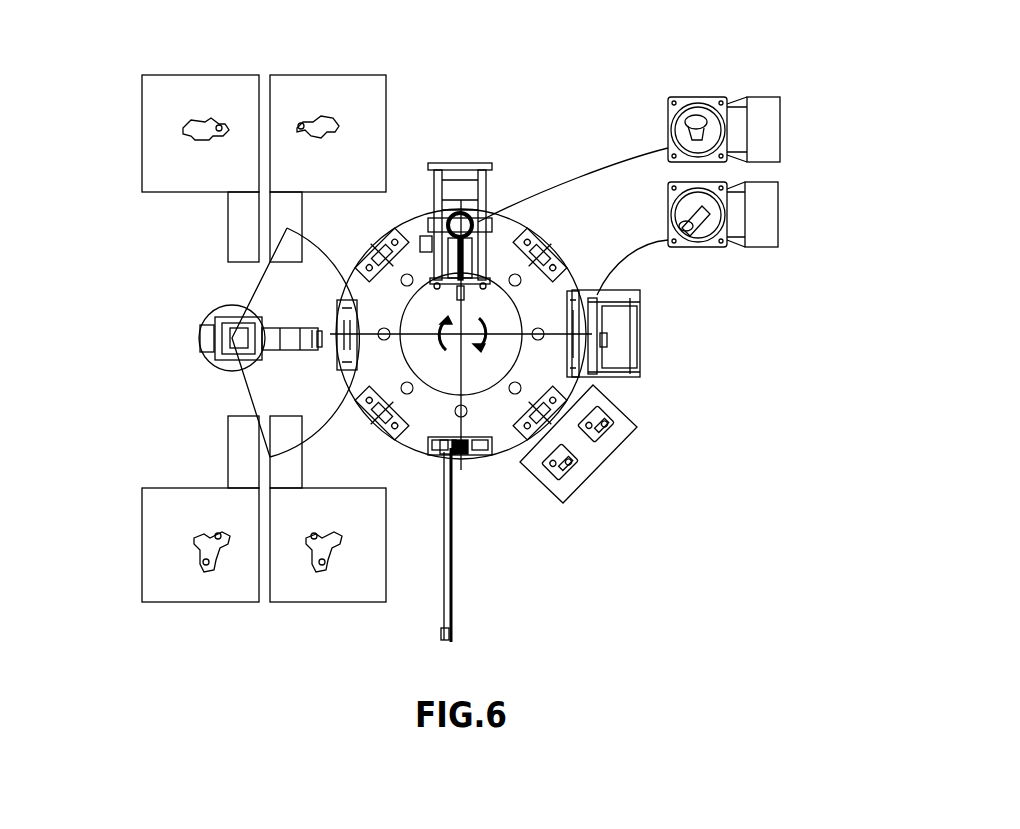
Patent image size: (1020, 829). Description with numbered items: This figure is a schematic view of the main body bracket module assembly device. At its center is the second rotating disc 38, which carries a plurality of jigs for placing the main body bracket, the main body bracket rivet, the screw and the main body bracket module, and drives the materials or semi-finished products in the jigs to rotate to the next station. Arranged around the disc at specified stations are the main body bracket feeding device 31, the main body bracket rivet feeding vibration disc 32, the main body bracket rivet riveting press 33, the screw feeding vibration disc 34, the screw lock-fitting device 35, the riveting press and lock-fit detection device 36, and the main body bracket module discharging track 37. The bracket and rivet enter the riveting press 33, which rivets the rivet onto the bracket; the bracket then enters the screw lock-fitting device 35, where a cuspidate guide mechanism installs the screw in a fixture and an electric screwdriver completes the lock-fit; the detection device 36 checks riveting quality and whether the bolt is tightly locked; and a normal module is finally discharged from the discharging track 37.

The main body bracket feeding device 31 is at (250, 507).
The main body bracket rivet feeding vibration disc 32 is at (760, 138).
The main body bracket rivet riveting press 33 is at (477, 247).
The screw feeding vibration disc 34 is at (758, 225).
The screw lock-fitting device 35 is at (620, 348).
The riveting press and lock-fit detection device 36 is at (592, 458).
The main body bracket module discharging track 37 is at (453, 537).
The second rotating disc 38 is at (415, 227).